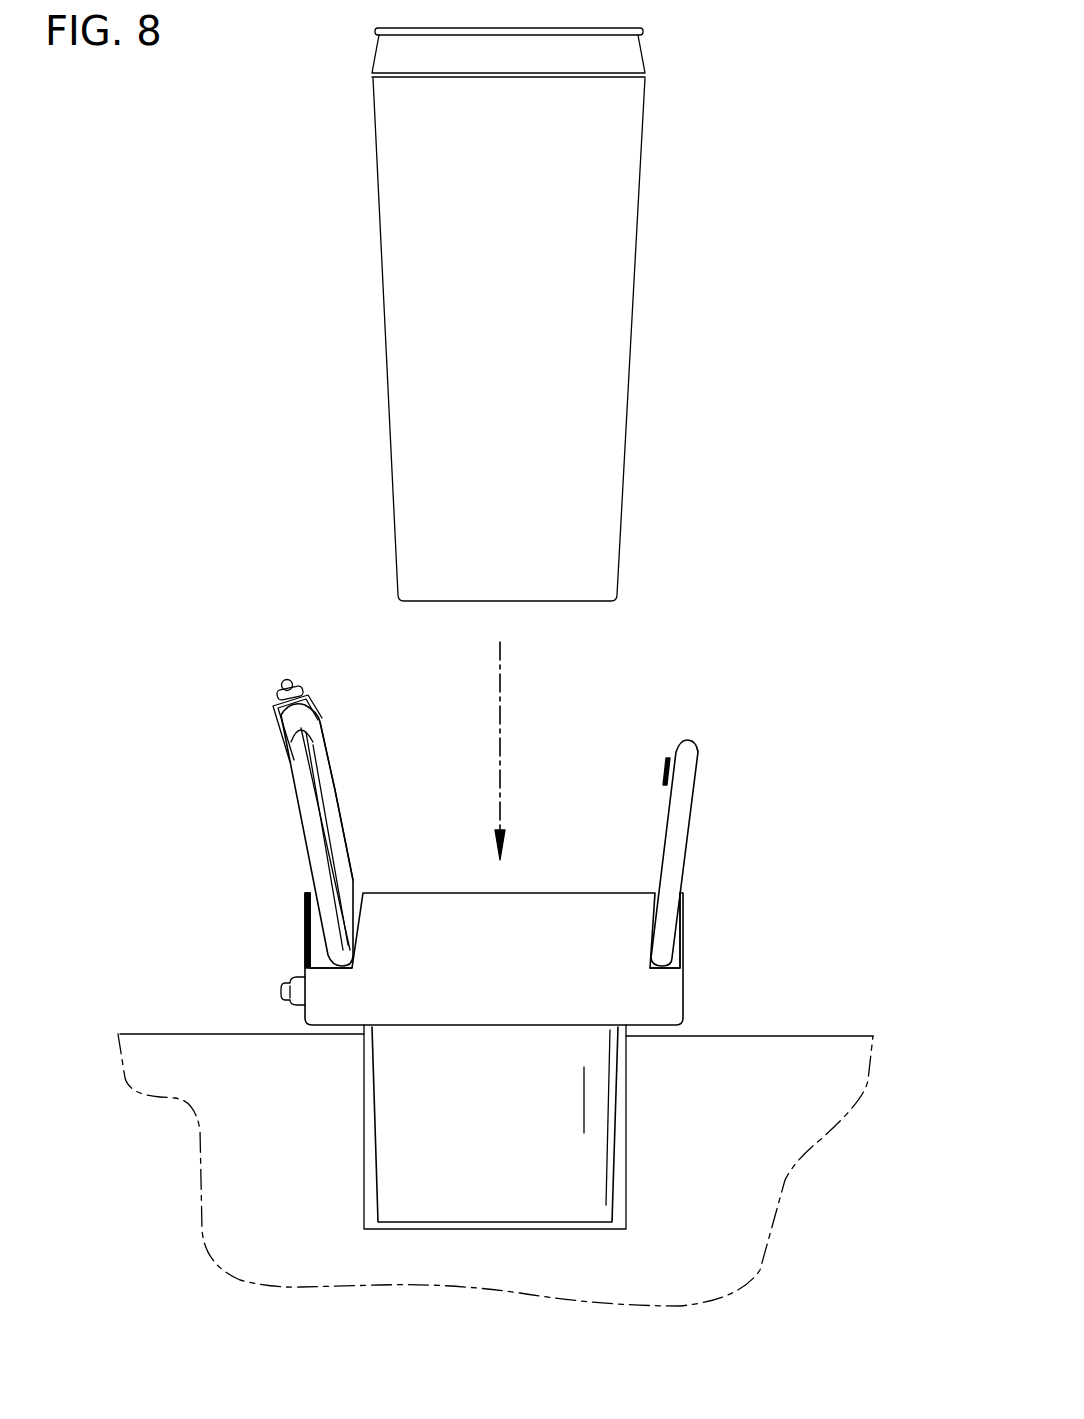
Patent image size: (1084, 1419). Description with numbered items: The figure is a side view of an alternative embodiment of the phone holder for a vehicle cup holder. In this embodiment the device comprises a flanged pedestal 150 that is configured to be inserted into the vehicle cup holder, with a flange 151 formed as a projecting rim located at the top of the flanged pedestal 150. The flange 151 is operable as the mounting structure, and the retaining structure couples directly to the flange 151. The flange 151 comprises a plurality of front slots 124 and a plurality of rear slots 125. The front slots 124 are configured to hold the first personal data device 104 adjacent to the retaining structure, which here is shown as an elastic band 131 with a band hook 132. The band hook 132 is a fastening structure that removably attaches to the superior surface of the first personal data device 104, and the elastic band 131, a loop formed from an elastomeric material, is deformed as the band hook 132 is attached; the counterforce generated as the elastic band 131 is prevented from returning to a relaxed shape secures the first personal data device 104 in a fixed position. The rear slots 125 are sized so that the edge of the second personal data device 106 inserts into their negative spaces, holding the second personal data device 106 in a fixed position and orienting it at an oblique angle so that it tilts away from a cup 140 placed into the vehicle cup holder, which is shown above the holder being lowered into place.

The cup 140 is at (628, 316).
The first personal data device 104 is at (302, 822).
The second personal data device 106 is at (690, 803).
The elastic band 131 is at (340, 803).
The band hook 132 is at (275, 702).
The plurality of front slots 124 is at (305, 933).
The plurality of rear slots 125 is at (684, 928).
The flange 151 is at (684, 992).
The flanged pedestal 150 is at (615, 1159).